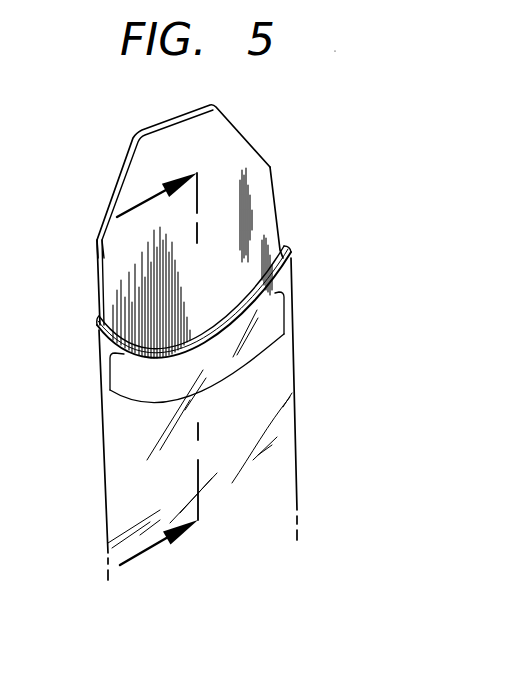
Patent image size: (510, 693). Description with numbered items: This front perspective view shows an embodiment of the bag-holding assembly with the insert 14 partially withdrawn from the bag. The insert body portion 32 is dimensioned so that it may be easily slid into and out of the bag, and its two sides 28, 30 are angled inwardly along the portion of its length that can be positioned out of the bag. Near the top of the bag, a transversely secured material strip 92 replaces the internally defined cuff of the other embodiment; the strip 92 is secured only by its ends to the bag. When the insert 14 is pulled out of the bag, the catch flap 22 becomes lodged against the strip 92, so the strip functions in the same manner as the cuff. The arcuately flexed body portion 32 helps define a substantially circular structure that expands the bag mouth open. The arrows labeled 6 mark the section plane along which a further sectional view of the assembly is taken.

The insert 14 is at (280, 164).
The catch flap 22 is at (263, 331).
The side 28 is at (120, 172).
The side 30 is at (240, 128).
The insert body portion 32 is at (215, 233).
The material strip 92 is at (283, 252).
The section line 6- 6 is at (157, 381).